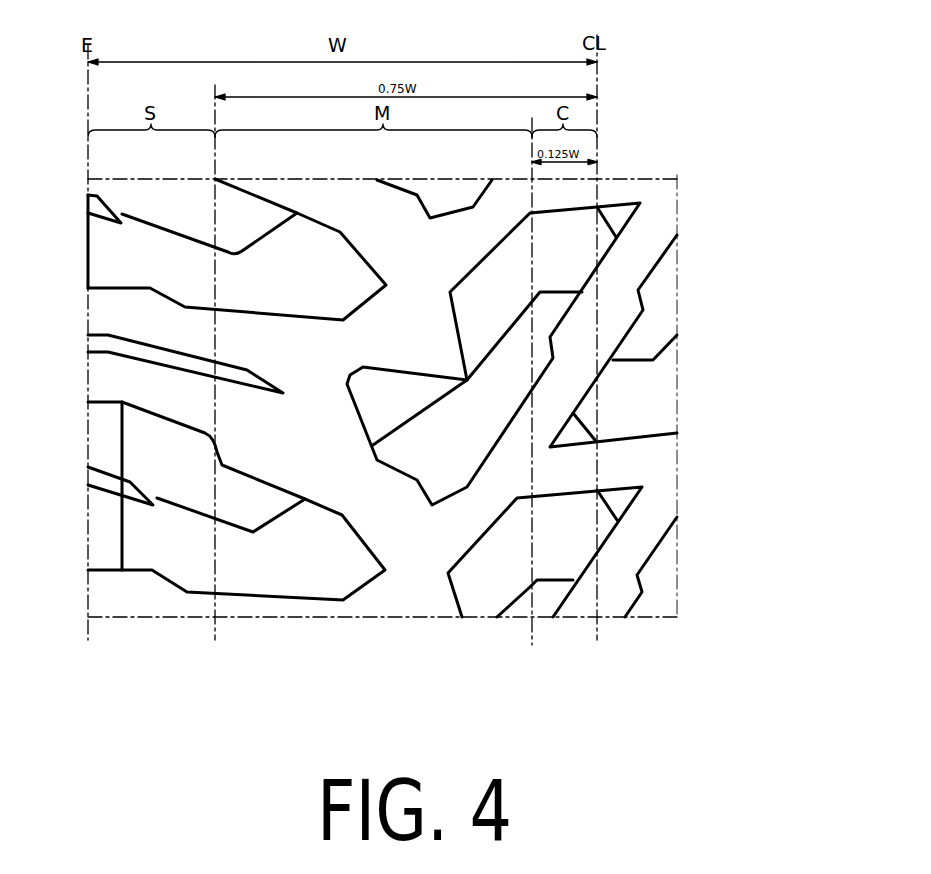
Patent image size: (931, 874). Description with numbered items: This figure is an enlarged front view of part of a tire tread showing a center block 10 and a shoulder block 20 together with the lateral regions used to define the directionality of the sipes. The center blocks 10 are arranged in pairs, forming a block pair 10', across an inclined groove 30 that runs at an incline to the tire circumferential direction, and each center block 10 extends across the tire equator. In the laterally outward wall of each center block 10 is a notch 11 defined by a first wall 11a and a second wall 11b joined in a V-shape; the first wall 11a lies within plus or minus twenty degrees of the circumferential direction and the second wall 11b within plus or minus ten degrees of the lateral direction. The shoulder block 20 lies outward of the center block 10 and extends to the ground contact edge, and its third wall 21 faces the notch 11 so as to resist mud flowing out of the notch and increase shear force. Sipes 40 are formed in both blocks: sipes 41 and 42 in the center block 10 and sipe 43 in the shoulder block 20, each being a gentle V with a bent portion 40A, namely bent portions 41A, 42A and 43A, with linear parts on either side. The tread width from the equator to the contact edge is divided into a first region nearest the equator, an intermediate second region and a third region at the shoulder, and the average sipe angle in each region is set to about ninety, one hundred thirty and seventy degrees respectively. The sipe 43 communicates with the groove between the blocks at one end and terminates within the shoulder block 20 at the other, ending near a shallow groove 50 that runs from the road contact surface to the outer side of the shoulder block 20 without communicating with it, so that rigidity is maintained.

The center block 10 is at (601, 639).
The block pair 10' is at (615, 694).
The notch 11 is at (445, 364).
The first wall 11a is at (466, 372).
The second wall 11b is at (382, 368).
The shoulder block 20 is at (147, 447).
The third wall 21 is at (362, 305).
The inclined groove 30 is at (630, 270).
The sipe 40 is at (557, 354).
The bent portion 40A is at (630, 336).
The sipe 41 is at (520, 350).
The bent portion 41A is at (540, 292).
The sipe 42 is at (408, 422).
The bent portion 42A is at (438, 398).
The sipe 43 is at (195, 517).
The bent portion 43A is at (253, 533).
The shallow groove 50 is at (107, 480).